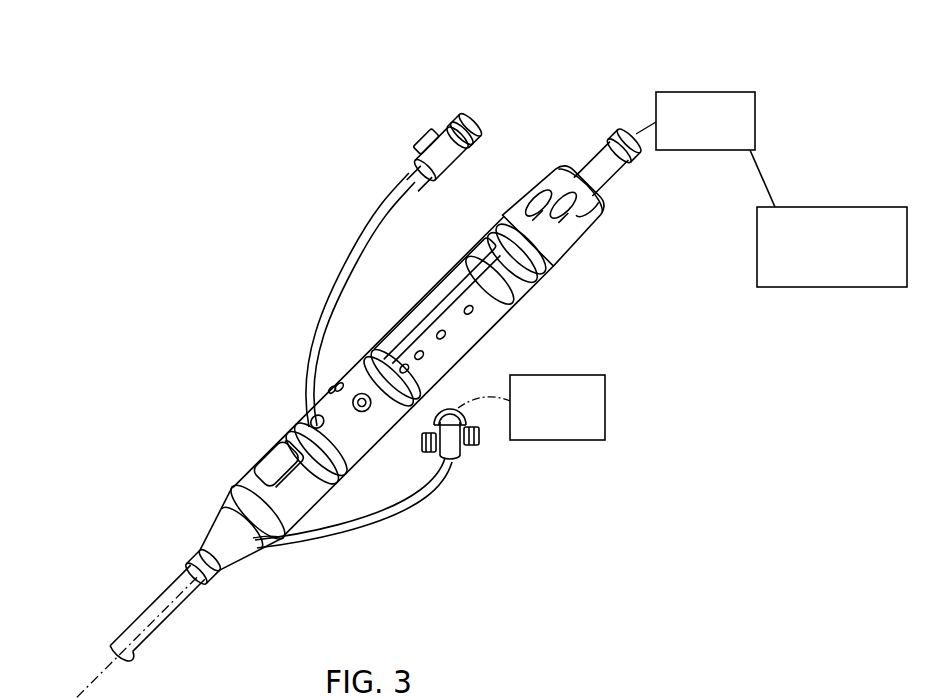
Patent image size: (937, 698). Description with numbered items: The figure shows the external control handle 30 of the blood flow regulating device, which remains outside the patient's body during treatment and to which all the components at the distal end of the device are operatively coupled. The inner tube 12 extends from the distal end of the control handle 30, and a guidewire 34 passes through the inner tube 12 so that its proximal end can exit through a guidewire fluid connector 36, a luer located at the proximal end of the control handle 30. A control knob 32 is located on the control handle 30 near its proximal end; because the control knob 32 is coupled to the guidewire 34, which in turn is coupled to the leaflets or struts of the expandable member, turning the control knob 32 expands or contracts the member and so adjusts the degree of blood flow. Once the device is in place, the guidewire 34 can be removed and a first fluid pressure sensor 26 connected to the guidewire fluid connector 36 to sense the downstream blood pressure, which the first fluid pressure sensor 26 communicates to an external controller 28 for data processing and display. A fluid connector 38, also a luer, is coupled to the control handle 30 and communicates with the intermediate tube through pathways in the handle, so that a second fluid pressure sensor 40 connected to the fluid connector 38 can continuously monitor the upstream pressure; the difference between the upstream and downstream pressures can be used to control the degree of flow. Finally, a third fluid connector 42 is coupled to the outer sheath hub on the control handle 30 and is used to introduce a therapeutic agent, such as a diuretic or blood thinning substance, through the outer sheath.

The inner tube 12 is at (157, 600).
The first fluid pressure sensor 26 is at (705, 92).
The external controller 28 is at (833, 207).
The control handle 30 is at (269, 418).
The control knob 32 is at (583, 248).
The guidewire 34 is at (88, 682).
The guidewire fluid connector 36 is at (615, 165).
The fluid connector 38 is at (450, 484).
The second fluid pressure sensor 40 is at (562, 373).
The third fluid connector 42 is at (408, 168).